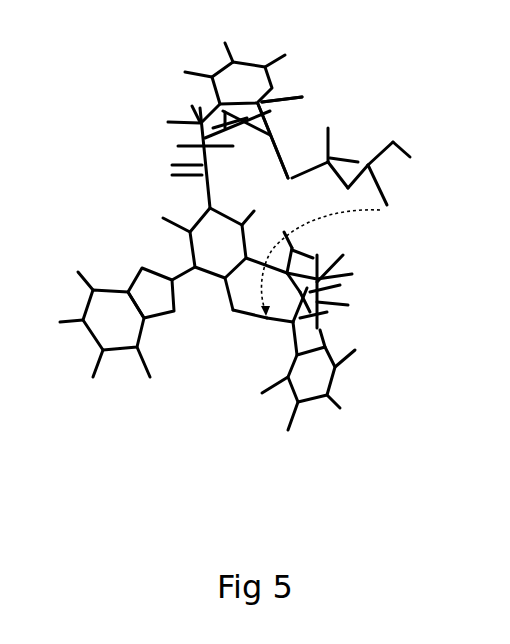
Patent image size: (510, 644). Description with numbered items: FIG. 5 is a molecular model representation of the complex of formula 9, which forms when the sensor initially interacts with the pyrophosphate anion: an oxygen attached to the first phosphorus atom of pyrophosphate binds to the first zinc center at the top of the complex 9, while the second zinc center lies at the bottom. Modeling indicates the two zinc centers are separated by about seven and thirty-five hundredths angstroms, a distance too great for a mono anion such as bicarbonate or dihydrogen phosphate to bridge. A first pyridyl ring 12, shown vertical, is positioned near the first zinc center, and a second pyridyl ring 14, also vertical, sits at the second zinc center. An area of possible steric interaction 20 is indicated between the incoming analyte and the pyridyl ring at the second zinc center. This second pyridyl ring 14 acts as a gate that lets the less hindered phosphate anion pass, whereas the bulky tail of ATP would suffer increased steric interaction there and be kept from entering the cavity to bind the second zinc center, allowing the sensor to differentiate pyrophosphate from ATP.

The complex of formula 9 is at (98, 100).
The first pyridyl ring 12 is at (315, 137).
The second pyridyl ring 14 is at (332, 331).
The area of possible steric interaction 20 is at (363, 263).